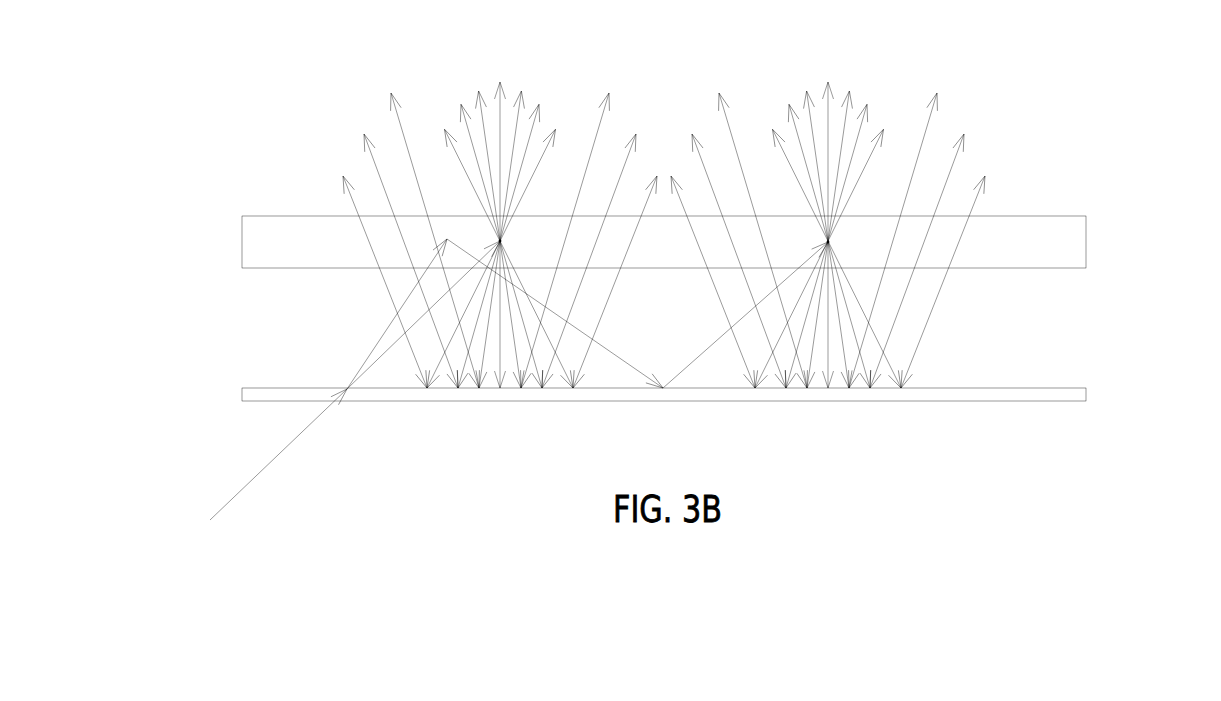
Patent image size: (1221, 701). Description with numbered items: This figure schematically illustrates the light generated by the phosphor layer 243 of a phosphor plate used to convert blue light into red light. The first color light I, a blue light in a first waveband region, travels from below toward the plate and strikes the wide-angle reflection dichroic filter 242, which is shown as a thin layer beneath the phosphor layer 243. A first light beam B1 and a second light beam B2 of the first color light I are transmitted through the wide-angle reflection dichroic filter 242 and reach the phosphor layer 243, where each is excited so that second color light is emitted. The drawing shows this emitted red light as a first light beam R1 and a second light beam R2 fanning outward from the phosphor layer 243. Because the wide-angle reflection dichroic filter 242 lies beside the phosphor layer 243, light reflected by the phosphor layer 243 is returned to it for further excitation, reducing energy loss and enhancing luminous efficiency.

The phosphor layer 243 is at (1068, 249).
The wide-angle reflection dichroic filter 242 is at (1075, 397).
The first color light I is at (270, 464).
The first light beam B1 is at (393, 346).
The second light beam B2 is at (385, 330).
The first light beam R1 is at (498, 214).
The second light beam R2 is at (831, 214).